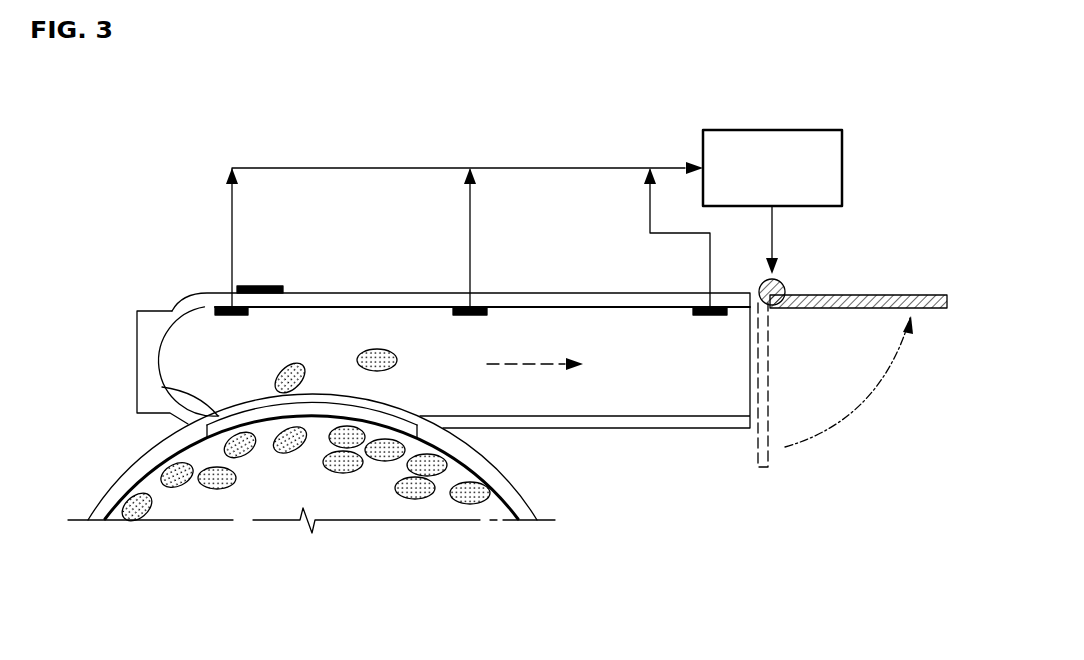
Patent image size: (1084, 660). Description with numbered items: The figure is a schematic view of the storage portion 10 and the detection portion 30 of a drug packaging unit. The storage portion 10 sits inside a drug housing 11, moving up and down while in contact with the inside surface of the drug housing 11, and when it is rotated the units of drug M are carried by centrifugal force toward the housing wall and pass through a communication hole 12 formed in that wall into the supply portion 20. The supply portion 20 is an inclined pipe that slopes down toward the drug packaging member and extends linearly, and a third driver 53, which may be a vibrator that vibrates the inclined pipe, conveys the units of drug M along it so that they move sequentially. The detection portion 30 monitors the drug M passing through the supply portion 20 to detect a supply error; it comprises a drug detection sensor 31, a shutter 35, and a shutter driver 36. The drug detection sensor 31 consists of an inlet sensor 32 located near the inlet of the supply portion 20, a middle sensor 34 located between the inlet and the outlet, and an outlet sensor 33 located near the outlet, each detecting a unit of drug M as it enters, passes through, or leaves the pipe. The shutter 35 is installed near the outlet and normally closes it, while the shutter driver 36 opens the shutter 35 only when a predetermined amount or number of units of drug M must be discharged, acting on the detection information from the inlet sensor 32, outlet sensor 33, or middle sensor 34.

The storage portion 10 is at (250, 508).
The drug housing 11 is at (142, 473).
The communication hole 12 is at (165, 387).
The supply portion 20 is at (540, 292).
The detection portion 30 is at (685, 148).
The drug detection sensor 31 is at (471, 476).
The inlet sensor 32 is at (233, 315).
The outlet sensor 33 is at (710, 316).
The middle sensor 34 is at (470, 316).
The shutter 35 is at (852, 295).
The shutter driver 36 is at (773, 128).
The third driver 53 is at (262, 285).
The drug M is at (378, 349).